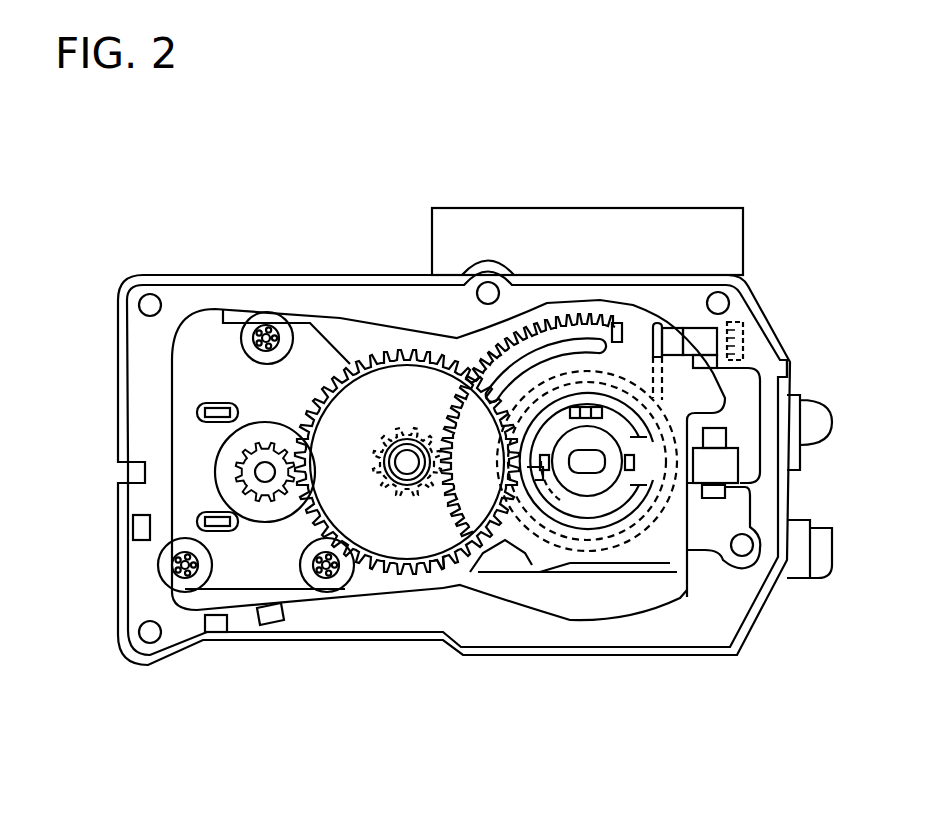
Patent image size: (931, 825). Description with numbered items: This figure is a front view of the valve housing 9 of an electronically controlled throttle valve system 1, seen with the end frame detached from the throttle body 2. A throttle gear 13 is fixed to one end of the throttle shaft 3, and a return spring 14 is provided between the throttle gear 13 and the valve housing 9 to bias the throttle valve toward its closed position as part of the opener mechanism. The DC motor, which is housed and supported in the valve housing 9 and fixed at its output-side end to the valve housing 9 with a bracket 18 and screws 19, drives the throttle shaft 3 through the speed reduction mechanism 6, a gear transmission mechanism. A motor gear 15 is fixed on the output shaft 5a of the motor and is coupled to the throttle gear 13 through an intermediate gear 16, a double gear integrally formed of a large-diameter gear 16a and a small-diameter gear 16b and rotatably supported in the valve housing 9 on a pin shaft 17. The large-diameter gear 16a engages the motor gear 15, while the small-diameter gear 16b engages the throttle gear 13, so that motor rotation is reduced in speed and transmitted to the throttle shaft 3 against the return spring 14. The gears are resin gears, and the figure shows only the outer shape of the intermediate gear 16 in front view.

The electronically controlled throttle valve system 1 is at (763, 288).
The throttle body 2 is at (292, 276).
The throttle shaft 3 is at (593, 480).
The output shaft 5a is at (258, 474).
The speed reduction mechanism 6 is at (549, 592).
The valve housing 9 is at (770, 378).
The throttle gear 13 is at (549, 330).
The return spring 14 is at (657, 336).
The motor gear 15 is at (270, 505).
The intermediate gear 16 is at (451, 568).
The large-diameter gear 16a is at (441, 576).
The small-diameter gear 16b is at (408, 470).
The pin shaft 17 is at (406, 474).
The bracket 18 is at (180, 395).
The screws 19 is at (264, 332).